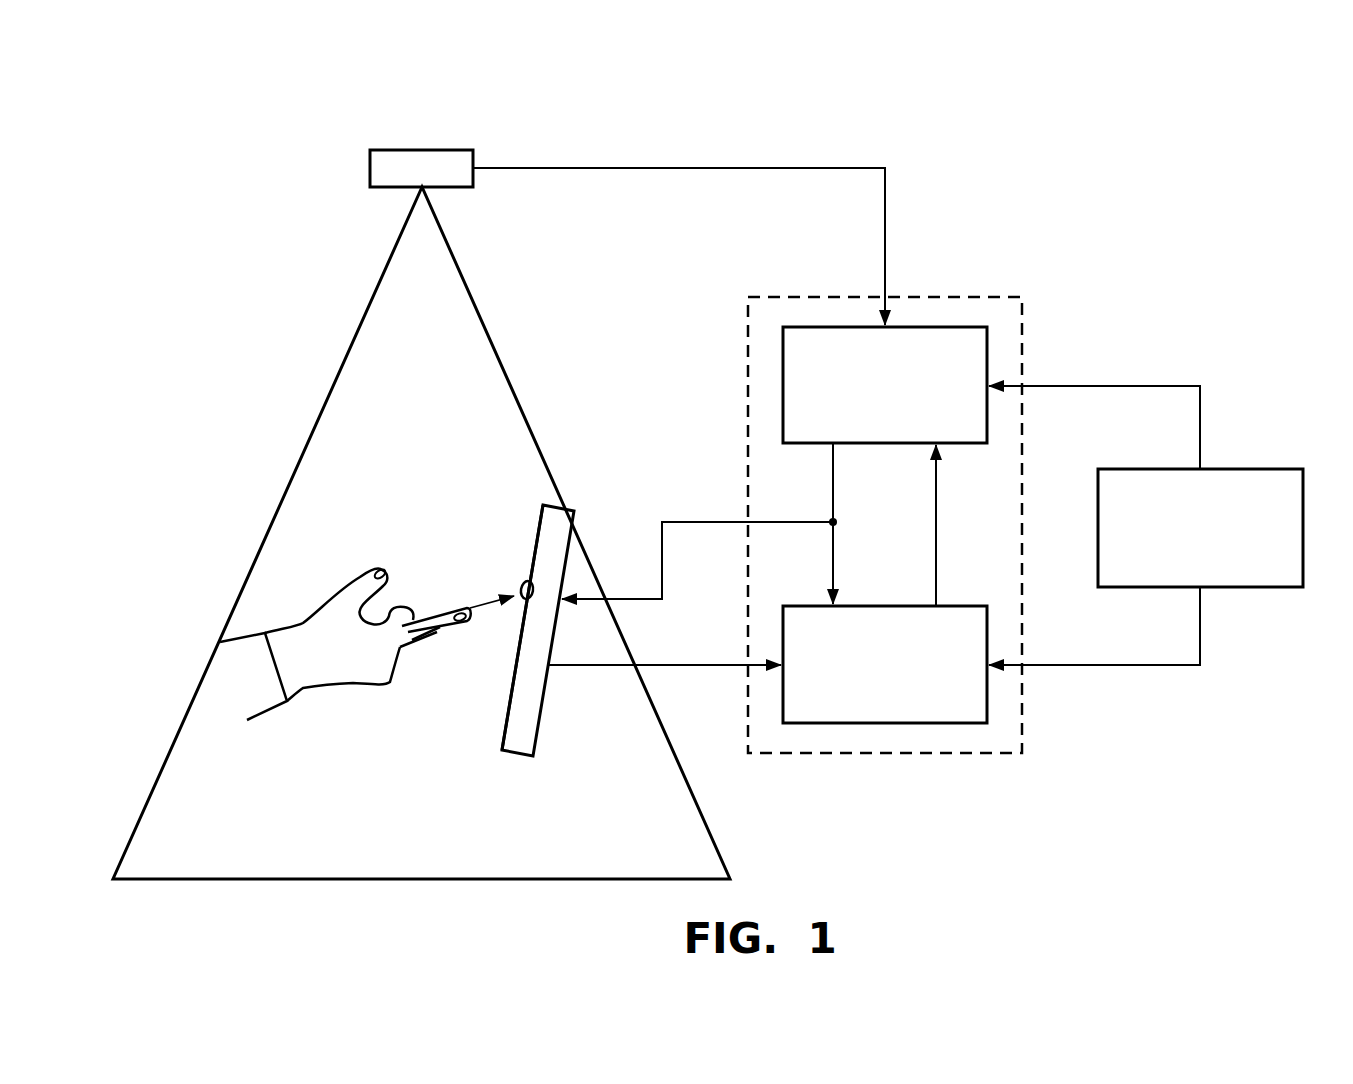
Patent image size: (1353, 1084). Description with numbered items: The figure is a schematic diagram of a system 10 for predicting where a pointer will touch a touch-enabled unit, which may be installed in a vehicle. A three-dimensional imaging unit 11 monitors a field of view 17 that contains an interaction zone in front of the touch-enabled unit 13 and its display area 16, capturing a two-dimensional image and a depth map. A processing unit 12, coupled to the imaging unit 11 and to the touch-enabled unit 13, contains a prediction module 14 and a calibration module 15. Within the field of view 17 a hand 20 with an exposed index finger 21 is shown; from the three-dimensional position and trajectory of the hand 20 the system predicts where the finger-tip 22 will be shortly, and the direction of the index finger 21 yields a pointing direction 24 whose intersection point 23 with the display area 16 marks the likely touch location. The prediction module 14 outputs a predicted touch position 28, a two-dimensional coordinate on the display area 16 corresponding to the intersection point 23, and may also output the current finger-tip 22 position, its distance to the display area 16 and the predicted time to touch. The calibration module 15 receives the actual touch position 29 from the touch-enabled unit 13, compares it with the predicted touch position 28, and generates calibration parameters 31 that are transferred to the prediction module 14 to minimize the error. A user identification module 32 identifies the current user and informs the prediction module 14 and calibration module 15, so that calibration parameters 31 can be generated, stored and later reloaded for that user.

The system 10 is at (212, 119).
The 3D imaging unit 11 is at (400, 150).
The processing unit 12 is at (955, 297).
The touch-enabled unit 13 is at (513, 756).
The prediction module 14 is at (885, 385).
The calibration module 15 is at (885, 664).
The display area 16 is at (502, 733).
The field of view 17 is at (323, 408).
The hand 20 is at (307, 618).
The index finger 21 is at (430, 612).
The finger-tip 22 is at (465, 604).
The intersection point 23 is at (517, 600).
The pointing direction 24 is at (528, 581).
The predicted touch position 28 is at (833, 487).
The actual touch position 29 is at (693, 667).
The calibration parameters 31 is at (936, 487).
The user identification module 32 is at (1146, 525).